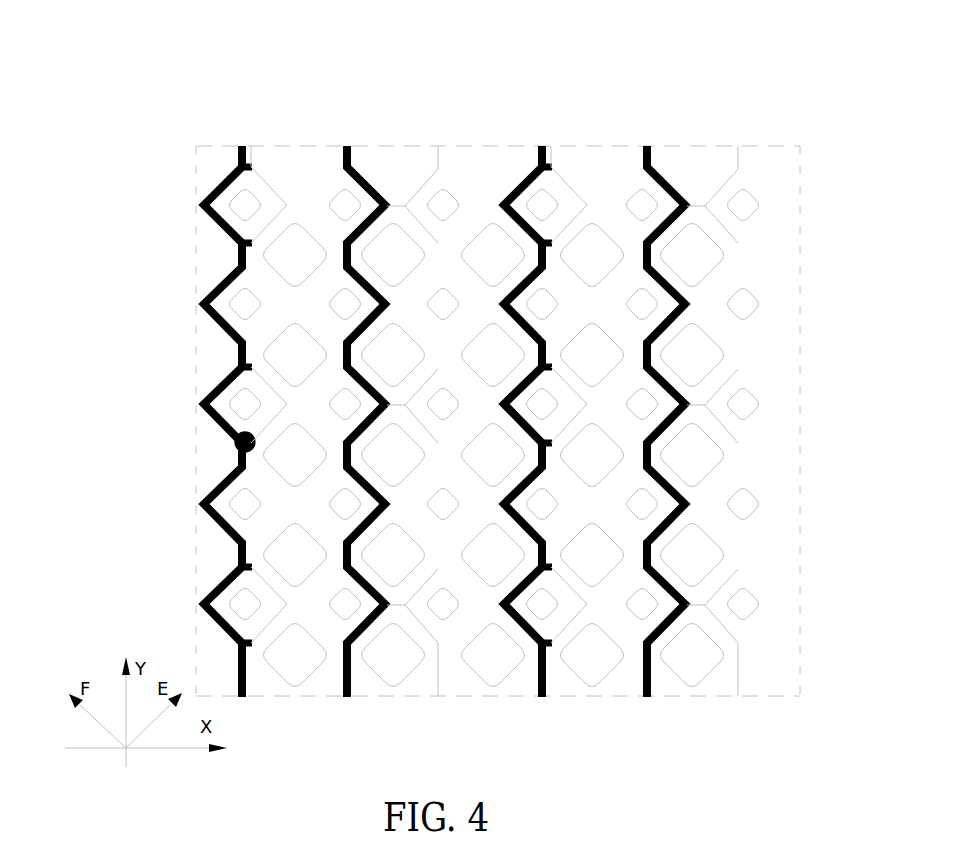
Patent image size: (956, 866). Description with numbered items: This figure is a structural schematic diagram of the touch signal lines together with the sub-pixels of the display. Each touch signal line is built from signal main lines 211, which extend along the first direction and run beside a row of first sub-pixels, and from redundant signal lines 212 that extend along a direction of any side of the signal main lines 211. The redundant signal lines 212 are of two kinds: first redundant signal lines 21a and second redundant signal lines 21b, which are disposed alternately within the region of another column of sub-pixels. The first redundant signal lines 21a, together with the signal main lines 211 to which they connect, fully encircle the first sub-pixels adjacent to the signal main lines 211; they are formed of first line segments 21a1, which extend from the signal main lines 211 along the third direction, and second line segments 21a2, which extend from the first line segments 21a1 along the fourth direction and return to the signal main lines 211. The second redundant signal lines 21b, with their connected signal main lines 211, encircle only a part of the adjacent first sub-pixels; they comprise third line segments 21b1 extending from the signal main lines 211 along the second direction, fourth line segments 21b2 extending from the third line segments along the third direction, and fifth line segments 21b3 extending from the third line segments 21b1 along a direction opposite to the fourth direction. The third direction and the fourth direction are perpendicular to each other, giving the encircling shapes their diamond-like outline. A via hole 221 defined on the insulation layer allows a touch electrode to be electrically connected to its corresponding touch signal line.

The redundant signal lines 212 is at (730, 73).
The first redundant signal lines 21a is at (362, 112).
The second redundant signal lines 21b is at (787, 112).
The first line segments 21a1 is at (280, 222).
The second line segments 21a2 is at (272, 174).
The third line segments 21b1 is at (689, 196).
The fourth line segments 21b2 is at (721, 177).
The fifth line segments 21b3 is at (724, 219).
The signal main lines 211 is at (218, 524).
The via hole 221 is at (230, 440).